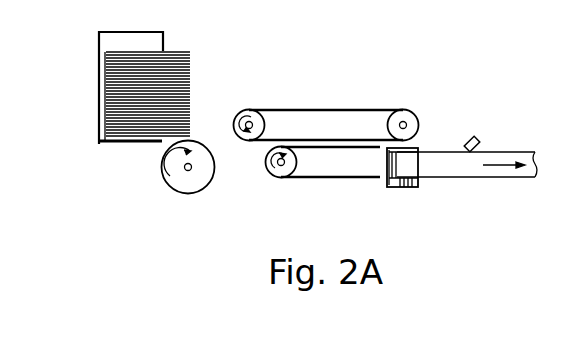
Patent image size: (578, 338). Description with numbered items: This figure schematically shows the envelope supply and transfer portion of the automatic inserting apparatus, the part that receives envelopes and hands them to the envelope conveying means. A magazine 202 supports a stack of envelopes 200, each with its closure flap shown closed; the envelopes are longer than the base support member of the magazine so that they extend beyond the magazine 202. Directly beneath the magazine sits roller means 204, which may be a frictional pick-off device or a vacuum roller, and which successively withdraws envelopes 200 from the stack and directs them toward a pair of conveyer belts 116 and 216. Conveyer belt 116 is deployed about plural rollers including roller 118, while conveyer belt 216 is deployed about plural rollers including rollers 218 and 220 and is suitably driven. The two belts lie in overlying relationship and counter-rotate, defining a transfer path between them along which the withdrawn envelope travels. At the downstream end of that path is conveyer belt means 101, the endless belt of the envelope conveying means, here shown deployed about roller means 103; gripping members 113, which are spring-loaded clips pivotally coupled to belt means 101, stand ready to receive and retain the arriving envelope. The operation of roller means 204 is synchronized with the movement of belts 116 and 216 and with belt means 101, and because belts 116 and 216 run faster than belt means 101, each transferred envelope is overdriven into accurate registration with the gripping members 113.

The conveyer belt means 101 is at (453, 172).
The roller means 103 is at (400, 188).
The gripping members 113 is at (478, 140).
The conveyer belt 116 is at (356, 178).
The roller 118 is at (294, 162).
The envelopes 200 is at (183, 55).
The magazine 202 is at (99, 68).
The roller means 204 is at (176, 178).
The conveyer belt 216 is at (312, 109).
The roller 218 is at (247, 110).
The roller 220 is at (396, 111).